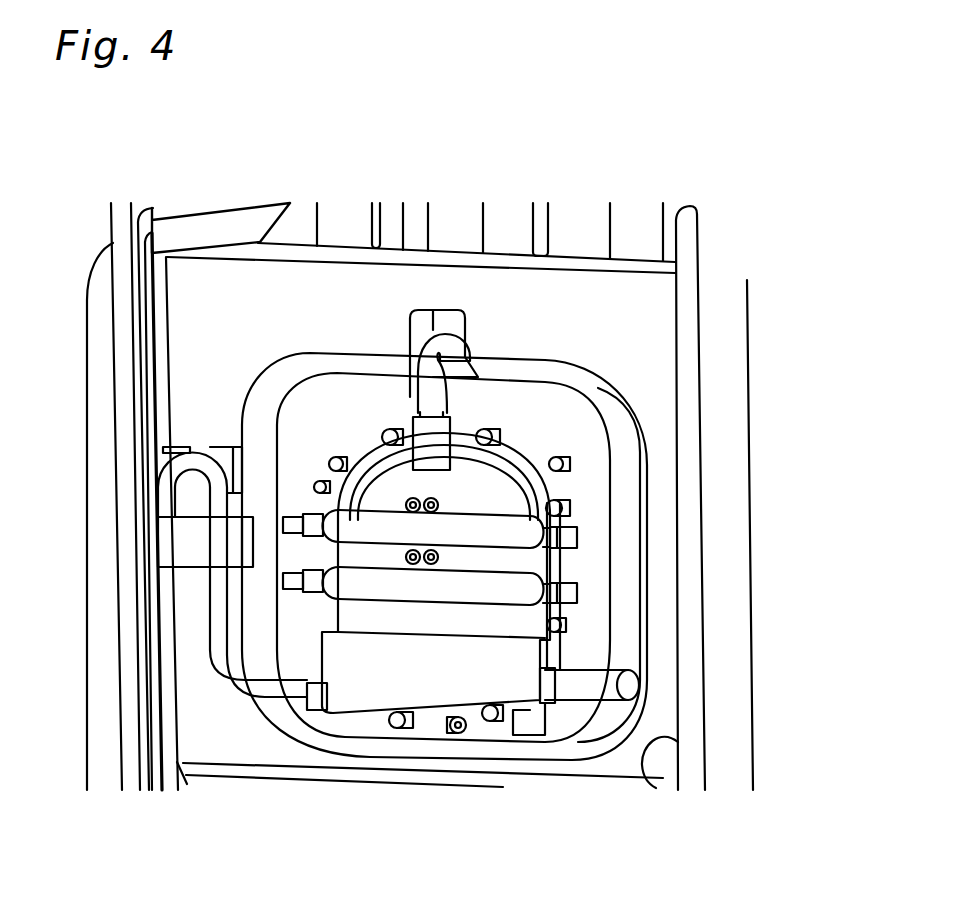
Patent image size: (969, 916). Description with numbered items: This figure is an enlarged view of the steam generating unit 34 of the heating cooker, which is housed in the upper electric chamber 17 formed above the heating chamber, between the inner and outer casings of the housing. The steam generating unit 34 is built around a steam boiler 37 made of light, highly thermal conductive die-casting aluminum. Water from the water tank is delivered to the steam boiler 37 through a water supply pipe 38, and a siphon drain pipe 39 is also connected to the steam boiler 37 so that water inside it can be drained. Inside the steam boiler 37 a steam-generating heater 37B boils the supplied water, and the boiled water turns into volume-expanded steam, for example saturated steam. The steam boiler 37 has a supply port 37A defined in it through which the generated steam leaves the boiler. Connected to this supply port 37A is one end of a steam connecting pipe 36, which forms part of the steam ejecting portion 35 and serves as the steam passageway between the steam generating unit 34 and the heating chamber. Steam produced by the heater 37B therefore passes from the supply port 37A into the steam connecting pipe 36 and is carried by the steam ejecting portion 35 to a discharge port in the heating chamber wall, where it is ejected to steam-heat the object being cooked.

The upper electric chamber 17 is at (277, 216).
The steam generating unit 34 is at (340, 410).
The steam ejecting portion 35 is at (450, 320).
The steam connecting pipe 36 is at (420, 350).
The steam boiler 37 is at (518, 442).
The supply port 37A is at (468, 357).
The steam-generating heater 37B is at (572, 588).
The water supply pipe 38 is at (583, 700).
The siphon drain pipe 39 is at (233, 697).